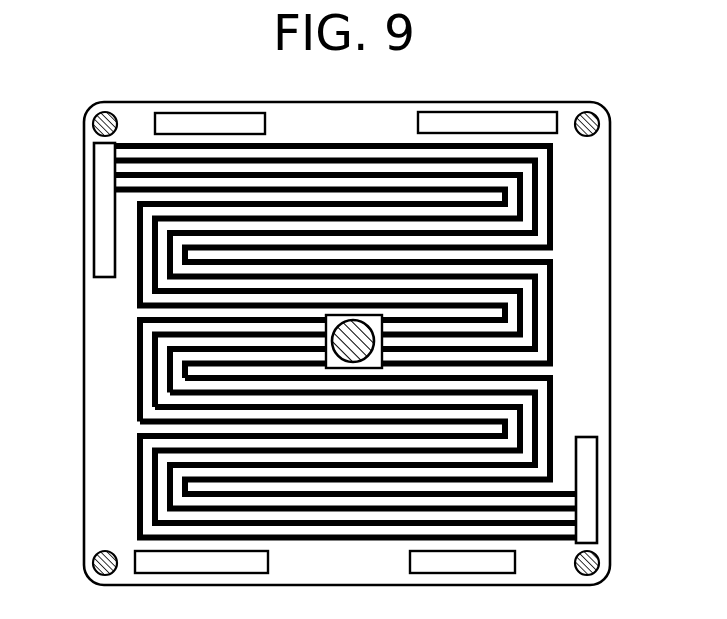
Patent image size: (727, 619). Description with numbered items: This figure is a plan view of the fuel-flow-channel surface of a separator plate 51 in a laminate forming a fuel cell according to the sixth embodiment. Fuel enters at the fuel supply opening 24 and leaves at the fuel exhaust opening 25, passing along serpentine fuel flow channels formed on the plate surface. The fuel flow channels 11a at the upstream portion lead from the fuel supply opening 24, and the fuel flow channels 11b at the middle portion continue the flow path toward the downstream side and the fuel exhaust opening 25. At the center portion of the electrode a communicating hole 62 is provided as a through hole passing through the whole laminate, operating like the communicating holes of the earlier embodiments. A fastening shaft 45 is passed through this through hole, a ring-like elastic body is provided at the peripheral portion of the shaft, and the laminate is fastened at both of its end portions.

The fuel flow channels at an upstream portion 11a is at (537, 177).
The fuel flow channels at a middle portion 11b is at (162, 479).
The fuel supply opening 24 is at (102, 192).
The fuel exhaust opening 25 is at (587, 458).
The fastening shaft 45 is at (335, 338).
The separator plate 51 is at (610, 237).
The communicating hole 62 is at (378, 325).